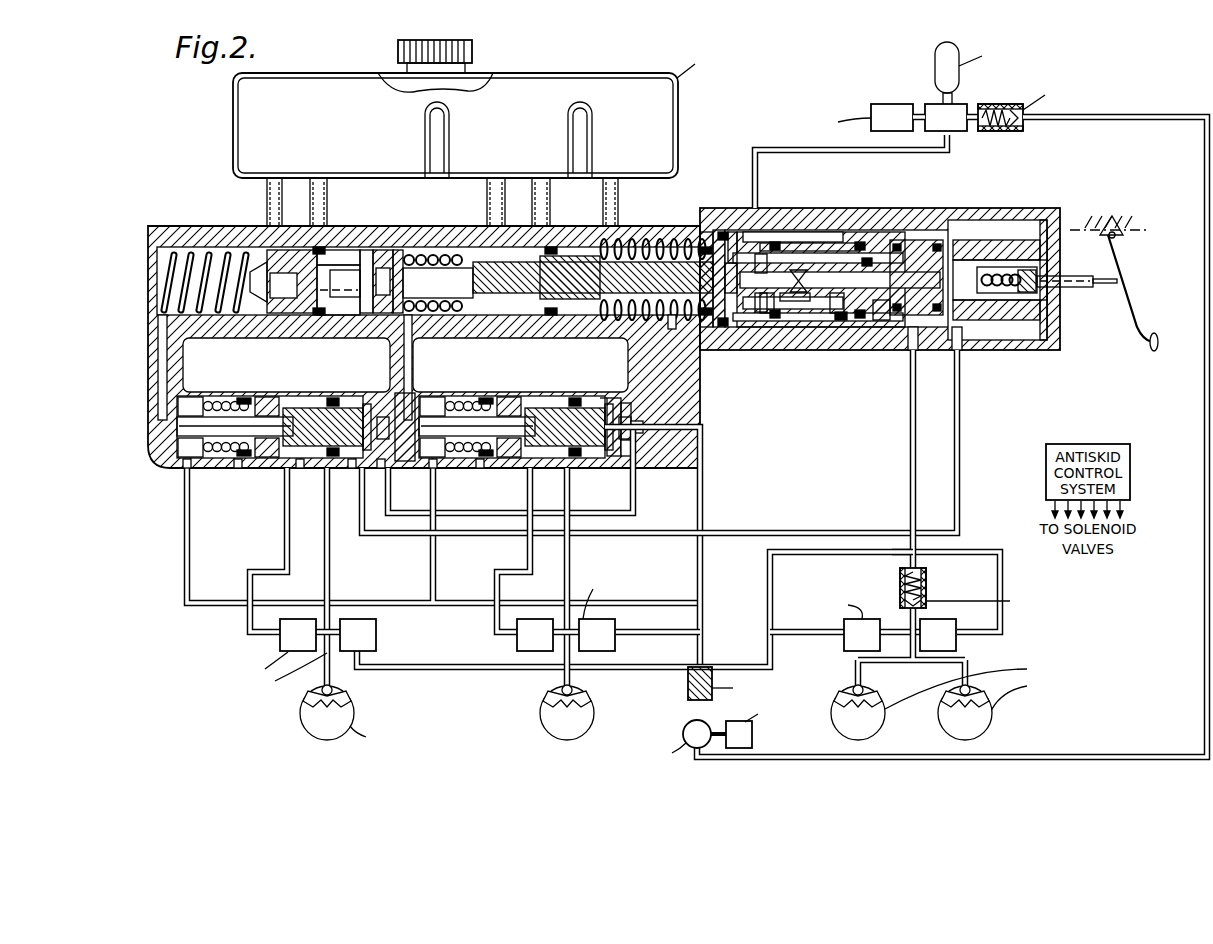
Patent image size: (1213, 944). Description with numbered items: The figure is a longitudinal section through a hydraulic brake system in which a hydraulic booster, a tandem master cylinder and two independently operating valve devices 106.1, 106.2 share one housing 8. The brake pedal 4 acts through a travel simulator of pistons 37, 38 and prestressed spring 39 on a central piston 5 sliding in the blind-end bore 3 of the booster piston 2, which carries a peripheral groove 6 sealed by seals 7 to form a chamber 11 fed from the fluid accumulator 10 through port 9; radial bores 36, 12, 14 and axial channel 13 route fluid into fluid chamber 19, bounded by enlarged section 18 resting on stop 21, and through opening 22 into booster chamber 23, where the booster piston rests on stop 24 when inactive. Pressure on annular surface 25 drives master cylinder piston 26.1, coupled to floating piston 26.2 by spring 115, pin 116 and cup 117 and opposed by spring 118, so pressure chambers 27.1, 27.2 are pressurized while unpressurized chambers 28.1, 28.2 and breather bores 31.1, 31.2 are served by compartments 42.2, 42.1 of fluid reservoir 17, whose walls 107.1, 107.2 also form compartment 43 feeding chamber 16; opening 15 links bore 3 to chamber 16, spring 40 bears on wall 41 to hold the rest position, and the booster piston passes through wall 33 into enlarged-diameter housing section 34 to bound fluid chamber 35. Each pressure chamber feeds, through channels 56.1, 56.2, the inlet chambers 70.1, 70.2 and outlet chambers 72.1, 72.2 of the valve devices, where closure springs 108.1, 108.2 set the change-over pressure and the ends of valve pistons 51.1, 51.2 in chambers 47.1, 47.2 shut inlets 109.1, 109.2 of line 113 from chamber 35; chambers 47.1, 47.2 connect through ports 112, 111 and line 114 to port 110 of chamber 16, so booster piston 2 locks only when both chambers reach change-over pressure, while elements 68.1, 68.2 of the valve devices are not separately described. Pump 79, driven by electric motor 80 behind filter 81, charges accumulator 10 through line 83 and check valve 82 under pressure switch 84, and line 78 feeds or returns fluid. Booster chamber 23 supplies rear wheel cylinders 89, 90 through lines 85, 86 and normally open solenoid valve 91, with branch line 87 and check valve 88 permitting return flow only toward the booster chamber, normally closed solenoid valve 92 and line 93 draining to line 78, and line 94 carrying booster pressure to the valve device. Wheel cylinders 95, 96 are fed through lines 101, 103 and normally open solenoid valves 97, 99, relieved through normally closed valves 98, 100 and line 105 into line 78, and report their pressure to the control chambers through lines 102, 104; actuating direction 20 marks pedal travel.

The booster piston 2 is at (828, 256).
The blind-end bore 3 is at (725, 331).
The brake pedal 4 is at (1133, 336).
The central piston 5 is at (838, 331).
The groove 6 is at (773, 321).
The seals 7 is at (722, 232).
The housing 8 is at (800, 246).
The port 9 is at (742, 232).
The fluid accumulator 10 is at (934, 59).
The chamber 11 is at (810, 243).
The radial bore 12 is at (800, 321).
The axial channel 13 is at (810, 300).
The radial bore 14 is at (842, 331).
The opening 15 is at (713, 235).
The chamber 16 is at (638, 240).
The fluid reservoir 17 is at (500, 67).
The enlarged section 18 is at (936, 250).
The fluid chamber 19 is at (853, 247).
The actuating direction 20 is at (1128, 279).
The stop 21 is at (951, 252).
The opening 22 is at (893, 248).
The booster chamber 23 is at (905, 250).
The stop 24 is at (870, 350).
The annular surface 25 is at (876, 331).
The master cylinder piston 26.1 is at (578, 300).
The floating piston 26.2 is at (341, 294).
The pressure chamber 27.1 is at (190, 250).
The pressure chamber 27.2 is at (441, 253).
The unpressurized chamber 28.1 is at (340, 256).
The unpressurized chamber 28.2 is at (526, 200).
The breather bore 31.1 is at (268, 228).
The breather bore 31.2 is at (505, 160).
The wall 33 is at (945, 332).
The enlarged-diameter housing section 34 is at (981, 240).
The fluid chamber 35 is at (1013, 245).
The radial bores 36 is at (762, 260).
The piston 37 is at (971, 302).
The piston 38 is at (1040, 291).
The spring 39 is at (1007, 301).
The spring 40 is at (641, 244).
The wall 41 is at (577, 247).
The compartment 42.1 is at (521, 130).
The compartment 42.2 is at (300, 136).
The compartment 43 is at (642, 93).
The chamber 47.1 is at (412, 378).
The chamber 47.2 is at (622, 418).
The valve piston 51.1 is at (238, 477).
The valve piston 51.2 is at (480, 477).
The channel 56.1 is at (157, 366).
The channel 56.2 is at (412, 350).
The seal 68.1 is at (320, 322).
The seal 68.2 is at (560, 322).
The inlet chamber 70.1 is at (288, 418).
The inlet chamber 70.2 is at (527, 412).
The outlet chamber 72.1 is at (343, 412).
The outlet chamber 72.2 is at (592, 412).
The line 78 is at (703, 468).
The fluid pump 79 is at (684, 731).
The electric motor 80 is at (752, 733).
The filter 81 is at (688, 687).
The check valve 82 is at (1007, 104).
The line 83 is at (1205, 396).
The pressure switch 84 is at (892, 108).
The line 85 is at (910, 471).
The line 86 is at (1002, 558).
The branch line 87 is at (895, 555).
The check valve 88 is at (927, 588).
The wheel cylinder 89 is at (853, 743).
The wheel cylinder 90 is at (940, 721).
The solenoid valve 91 is at (960, 641).
The solenoid valve 92 is at (848, 651).
The line 93 is at (770, 651).
The line 94 is at (184, 557).
The wheel cylinder 95 is at (305, 701).
The wheel cylinder 96 is at (585, 699).
The solenoid valve 97 is at (280, 641).
The solenoid valve 98 is at (377, 635).
The solenoid valve 99 is at (535, 668).
The solenoid valve 100 is at (615, 631).
The line 101 is at (283, 559).
The line 102 is at (326, 581).
The line 103 is at (490, 586).
The line 104 is at (496, 598).
The line 105 is at (320, 668).
The valve device 106.1 is at (178, 473).
The valve device 106.2 is at (451, 478).
The wall 107.1 is at (590, 112).
The wall 107.2 is at (425, 135).
The closure spring 108.1 is at (300, 463).
The closure spring 108.2 is at (600, 461).
The inlet 109.1 is at (352, 468).
The inlet 109.2 is at (608, 441).
The port 110 is at (672, 330).
The port 111 is at (638, 430).
The port 112 is at (383, 470).
The line 113 is at (395, 561).
The line 114 is at (636, 450).
The spring 115 is at (410, 250).
The pin 116 is at (452, 258).
The cup-shaped structure 117 is at (403, 252).
The spring 118 is at (165, 228).